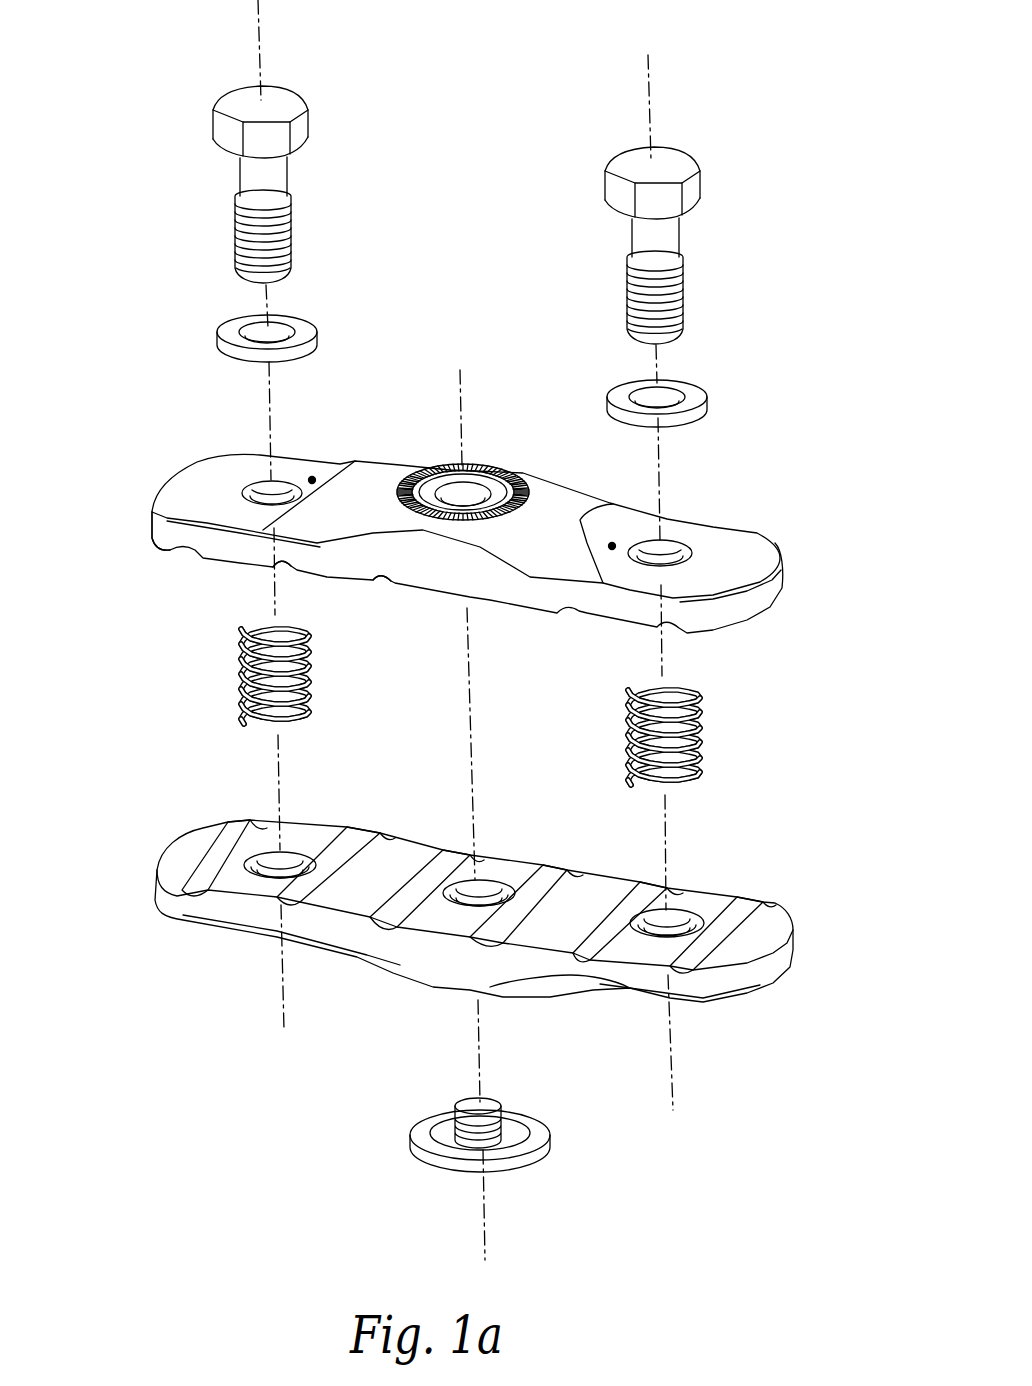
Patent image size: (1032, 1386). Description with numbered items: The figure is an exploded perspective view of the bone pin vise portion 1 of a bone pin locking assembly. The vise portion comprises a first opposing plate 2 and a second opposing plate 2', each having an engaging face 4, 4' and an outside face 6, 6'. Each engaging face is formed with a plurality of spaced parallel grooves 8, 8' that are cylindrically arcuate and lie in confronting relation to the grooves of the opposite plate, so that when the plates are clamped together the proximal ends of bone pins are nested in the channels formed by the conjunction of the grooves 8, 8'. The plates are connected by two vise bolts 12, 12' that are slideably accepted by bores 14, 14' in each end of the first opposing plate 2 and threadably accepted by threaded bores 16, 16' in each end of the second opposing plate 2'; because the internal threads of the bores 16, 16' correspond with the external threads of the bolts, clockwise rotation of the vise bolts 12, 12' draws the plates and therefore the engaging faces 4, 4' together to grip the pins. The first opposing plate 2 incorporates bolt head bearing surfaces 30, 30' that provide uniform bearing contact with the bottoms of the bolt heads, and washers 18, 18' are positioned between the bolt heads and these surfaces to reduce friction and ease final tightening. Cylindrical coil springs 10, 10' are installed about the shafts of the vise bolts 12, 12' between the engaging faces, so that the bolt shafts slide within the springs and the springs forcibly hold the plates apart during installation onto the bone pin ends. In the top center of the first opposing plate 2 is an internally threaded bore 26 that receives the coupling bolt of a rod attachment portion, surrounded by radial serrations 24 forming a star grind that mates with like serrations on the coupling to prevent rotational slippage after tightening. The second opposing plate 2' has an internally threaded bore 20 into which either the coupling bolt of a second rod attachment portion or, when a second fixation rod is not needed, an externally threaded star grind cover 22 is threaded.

The bone pin vise portion 1 is at (489, 630).
The first opposing plate 2 is at (443, 499).
The second opposing plate 2' is at (424, 912).
The engaging face 4 is at (171, 556).
The engaging face 4' is at (211, 821).
The outside face 6 is at (706, 500).
The outside face 6' is at (683, 990).
The spaced parallel grooves 8 is at (332, 618).
The spaced parallel grooves 8' is at (347, 828).
The coil spring 10 is at (224, 676).
The coil spring 10' is at (716, 737).
The vise bolt 12 is at (218, 181).
The vise bolt 12' is at (610, 242).
The bore 14 is at (246, 445).
The bore 14' is at (688, 499).
The threaded bore 16 is at (283, 809).
The threaded bore 16' is at (678, 865).
The washer 18 is at (216, 338).
The washer 18' is at (716, 391).
The internally threaded bore 20 is at (487, 898).
The star grind cover 22 is at (410, 1147).
The serrations 24 is at (470, 421).
The threaded bore 26 is at (447, 491).
The bolt head bearing surface 30 is at (322, 428).
The bolt head bearing surface 30' is at (596, 484).